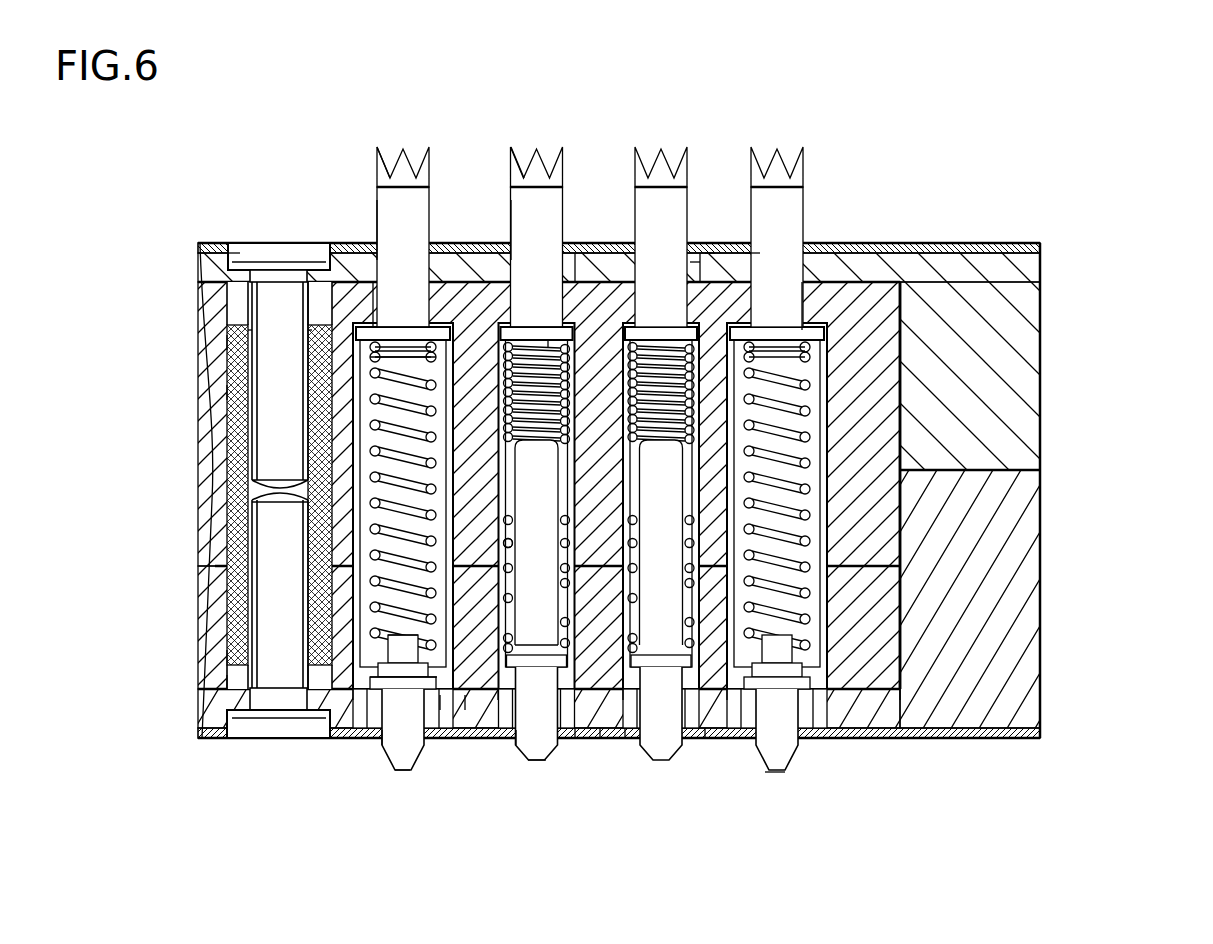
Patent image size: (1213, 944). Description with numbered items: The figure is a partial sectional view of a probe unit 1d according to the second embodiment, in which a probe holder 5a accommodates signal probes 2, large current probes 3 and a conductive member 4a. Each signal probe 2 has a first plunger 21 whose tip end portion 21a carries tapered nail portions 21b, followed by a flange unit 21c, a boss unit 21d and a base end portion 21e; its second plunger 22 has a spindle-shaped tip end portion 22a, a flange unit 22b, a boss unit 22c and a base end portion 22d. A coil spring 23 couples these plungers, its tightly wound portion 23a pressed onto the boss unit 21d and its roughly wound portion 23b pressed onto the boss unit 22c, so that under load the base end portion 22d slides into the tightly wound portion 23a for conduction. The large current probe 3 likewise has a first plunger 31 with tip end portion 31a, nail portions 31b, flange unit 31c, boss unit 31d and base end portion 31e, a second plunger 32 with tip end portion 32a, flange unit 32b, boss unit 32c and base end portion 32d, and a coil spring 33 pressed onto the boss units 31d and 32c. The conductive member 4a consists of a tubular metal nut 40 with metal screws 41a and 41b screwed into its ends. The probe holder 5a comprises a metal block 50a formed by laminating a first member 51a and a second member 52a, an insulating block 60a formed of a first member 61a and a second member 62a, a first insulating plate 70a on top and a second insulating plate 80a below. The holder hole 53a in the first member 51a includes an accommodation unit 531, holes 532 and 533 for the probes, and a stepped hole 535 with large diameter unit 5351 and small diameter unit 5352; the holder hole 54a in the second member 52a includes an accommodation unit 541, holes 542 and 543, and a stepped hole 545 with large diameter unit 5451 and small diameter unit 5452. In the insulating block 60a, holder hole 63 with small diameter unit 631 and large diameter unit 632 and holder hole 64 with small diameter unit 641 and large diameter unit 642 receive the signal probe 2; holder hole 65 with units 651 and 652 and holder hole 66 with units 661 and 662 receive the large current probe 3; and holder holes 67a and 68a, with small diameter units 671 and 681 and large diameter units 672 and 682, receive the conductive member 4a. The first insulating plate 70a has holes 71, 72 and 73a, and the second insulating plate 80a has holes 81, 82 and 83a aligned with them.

The probe unit 1d is at (1063, 100).
The signal probe 2 is at (550, 140).
The large current probe 3 is at (424, 140).
The conductive member 4a is at (257, 246).
The probe holder 5a is at (1160, 243).
The first plunger 21 is at (510, 192).
The tip end portion 21a is at (510, 245).
The nail portion 21b is at (516, 150).
The flange unit 21c is at (588, 300).
The boss unit 21d is at (503, 328).
The base end portion 21e is at (548, 347).
The second plunger 22 is at (541, 772).
The tip end portion 22a is at (532, 762).
The flange unit 22b is at (518, 740).
The boss unit 22c is at (546, 650).
The base end portion 22d is at (513, 547).
The coil spring 23 is at (480, 820).
The tightly wound portion 23a is at (445, 700).
The roughly wound portion 23b is at (465, 700).
The first plunger 31 is at (376, 192).
The tip end portion 31a is at (376, 245).
The nail portion 31b is at (390, 150).
The flange unit 31c is at (373, 305).
The boss unit 31d is at (395, 335).
The base end portion 31e is at (380, 356).
The second plunger 32 is at (405, 772).
The tip end portion 32a is at (395, 765).
The flange unit 32b is at (385, 742).
The boss unit 32c is at (380, 678).
The base end portion 32d is at (390, 640).
The coil spring 33 is at (340, 565).
The metal nut 40 is at (243, 468).
The metal screw 41a is at (238, 297).
The metal screw 41b is at (262, 698).
The metal block 50a is at (1110, 446).
The first member 51a is at (1032, 465).
The second member 52a is at (1032, 493).
The holder hole 53a is at (900, 72).
The accommodation unit 531 is at (897, 325).
The hole 532 is at (572, 325).
The hole 533 is at (447, 325).
The hole 535 is at (345, 96).
The large diameter unit 5351 is at (318, 322).
The small diameter unit 5352 is at (300, 322).
The holder hole 54a is at (900, 854).
The accommodation unit 541 is at (897, 695).
The hole 542 is at (500, 695).
The hole 543 is at (358, 695).
The hole 545 is at (322, 834).
The large diameter unit 5451 is at (300, 738).
The small diameter unit 5452 is at (262, 738).
The insulating block 60a is at (1110, 541).
The first member 61a is at (903, 552).
The second member 62a is at (907, 593).
The holder hole 63 is at (742, 116).
The small diameter unit 631 is at (710, 280).
The large diameter unit 632 is at (703, 250).
The holder hole 64 is at (660, 820).
The small diameter unit 641 is at (627, 735).
The large diameter unit 642 is at (610, 735).
The holder hole 65 is at (1106, 296).
The small diameter unit 651 is at (810, 310).
The large diameter unit 652 is at (827, 387).
The holder hole 66 is at (1106, 636).
The small diameter unit 661 is at (828, 663).
The large diameter unit 662 is at (822, 623).
The holder hole 67a is at (105, 318).
The small diameter unit 671 is at (237, 342).
The large diameter unit 672 is at (237, 392).
The holder hole 68a is at (105, 640).
The small diameter unit 681 is at (237, 688).
The large diameter unit 682 is at (235, 657).
The first insulating plate 70a is at (1042, 247).
The hole 71 is at (698, 262).
The hole 72 is at (752, 255).
The hole 73a is at (238, 247).
The second insulating plate 80a is at (1042, 735).
The hole 81 is at (577, 700).
The hole 82 is at (773, 772).
The hole 83a is at (235, 740).